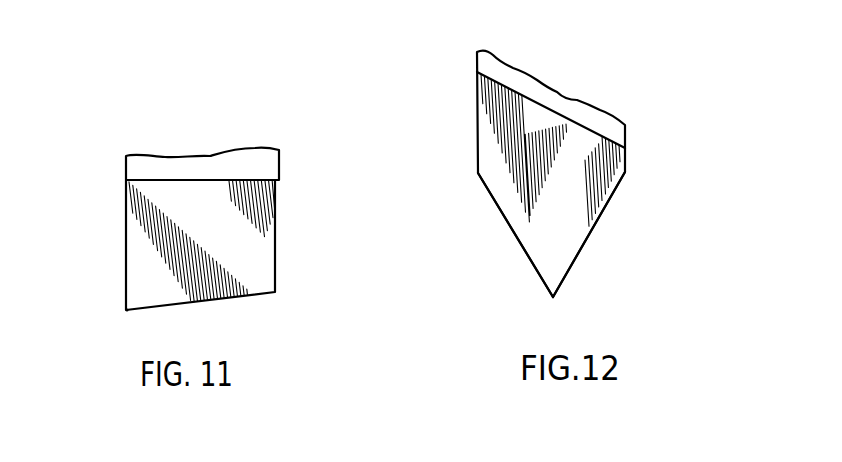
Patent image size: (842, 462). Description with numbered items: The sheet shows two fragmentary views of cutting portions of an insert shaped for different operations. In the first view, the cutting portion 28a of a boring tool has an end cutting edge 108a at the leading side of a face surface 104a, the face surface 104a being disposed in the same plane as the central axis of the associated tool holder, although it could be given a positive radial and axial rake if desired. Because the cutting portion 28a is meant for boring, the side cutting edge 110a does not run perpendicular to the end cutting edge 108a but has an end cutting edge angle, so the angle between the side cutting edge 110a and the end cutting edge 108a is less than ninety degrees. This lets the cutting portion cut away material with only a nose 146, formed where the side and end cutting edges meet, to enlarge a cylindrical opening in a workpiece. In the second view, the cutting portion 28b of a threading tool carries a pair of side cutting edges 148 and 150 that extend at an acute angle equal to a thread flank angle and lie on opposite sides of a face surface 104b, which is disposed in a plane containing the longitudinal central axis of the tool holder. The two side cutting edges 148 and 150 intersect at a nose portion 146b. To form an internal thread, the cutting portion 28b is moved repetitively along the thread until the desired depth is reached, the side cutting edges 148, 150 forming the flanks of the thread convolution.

In FIG. 11, the cutting portion 28a is at (120, 203).
In FIG. 11, the end cutting edge 108a is at (126, 250).
In FIG. 11, the side cutting edge 110a is at (203, 302).
In FIG. 11, the face surface 104a is at (246, 275).
In FIG. 11, the nose 146 is at (127, 310).
In FIG. 12, the cutting portion 28b is at (642, 212).
In FIG. 12, the face surface 104b is at (502, 193).
In FIG. 12, the side cutting edge 148 is at (510, 230).
In FIG. 12, the side cutting edge 150 is at (583, 224).
In FIG. 12, the nose portion 146b is at (553, 297).